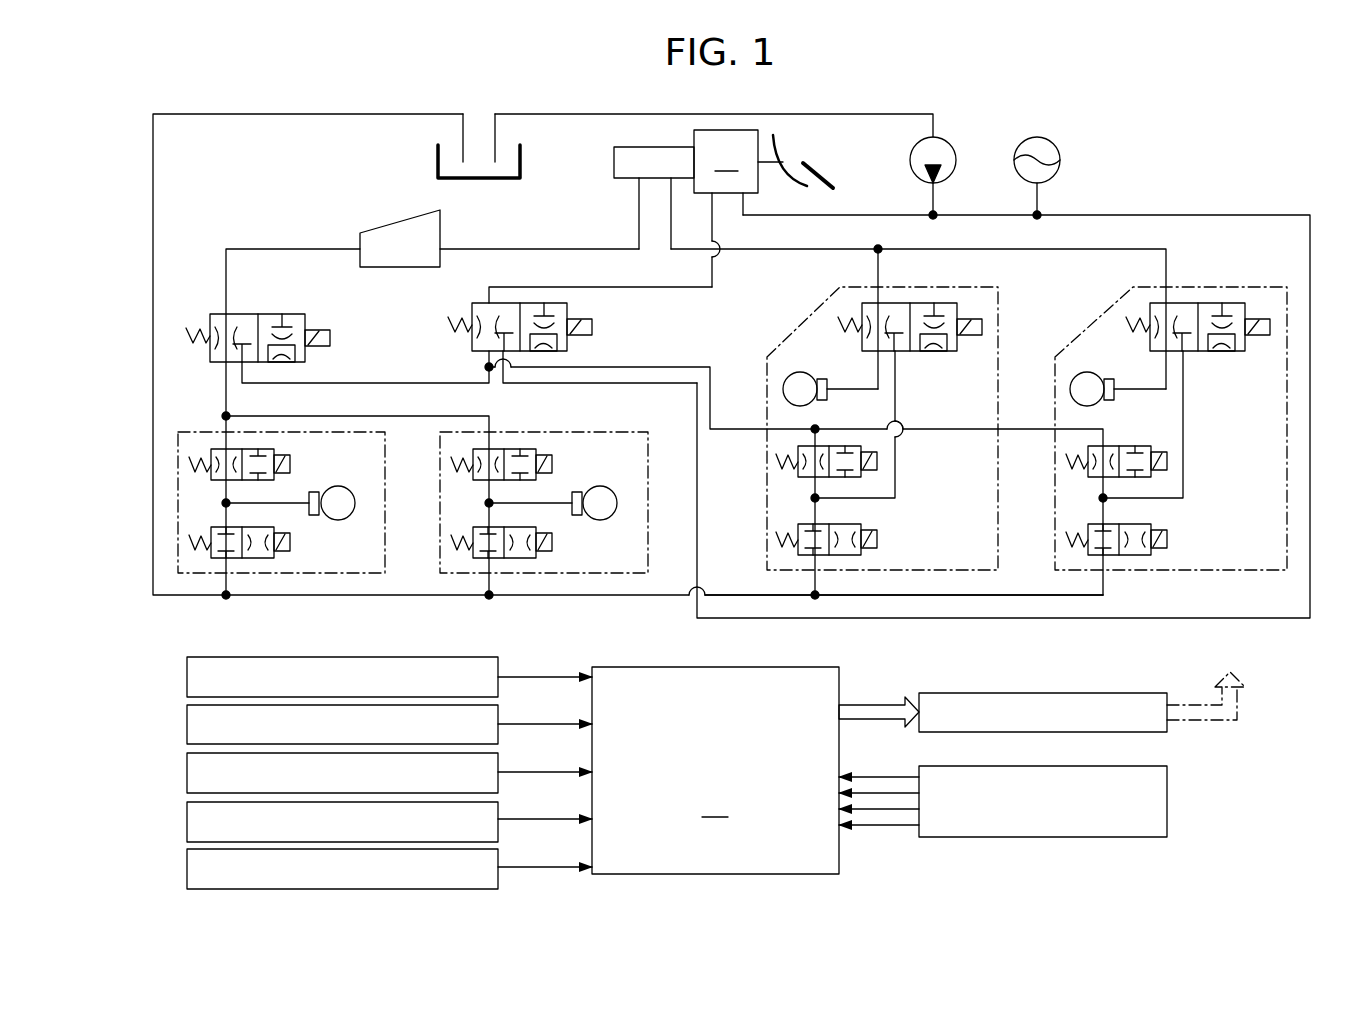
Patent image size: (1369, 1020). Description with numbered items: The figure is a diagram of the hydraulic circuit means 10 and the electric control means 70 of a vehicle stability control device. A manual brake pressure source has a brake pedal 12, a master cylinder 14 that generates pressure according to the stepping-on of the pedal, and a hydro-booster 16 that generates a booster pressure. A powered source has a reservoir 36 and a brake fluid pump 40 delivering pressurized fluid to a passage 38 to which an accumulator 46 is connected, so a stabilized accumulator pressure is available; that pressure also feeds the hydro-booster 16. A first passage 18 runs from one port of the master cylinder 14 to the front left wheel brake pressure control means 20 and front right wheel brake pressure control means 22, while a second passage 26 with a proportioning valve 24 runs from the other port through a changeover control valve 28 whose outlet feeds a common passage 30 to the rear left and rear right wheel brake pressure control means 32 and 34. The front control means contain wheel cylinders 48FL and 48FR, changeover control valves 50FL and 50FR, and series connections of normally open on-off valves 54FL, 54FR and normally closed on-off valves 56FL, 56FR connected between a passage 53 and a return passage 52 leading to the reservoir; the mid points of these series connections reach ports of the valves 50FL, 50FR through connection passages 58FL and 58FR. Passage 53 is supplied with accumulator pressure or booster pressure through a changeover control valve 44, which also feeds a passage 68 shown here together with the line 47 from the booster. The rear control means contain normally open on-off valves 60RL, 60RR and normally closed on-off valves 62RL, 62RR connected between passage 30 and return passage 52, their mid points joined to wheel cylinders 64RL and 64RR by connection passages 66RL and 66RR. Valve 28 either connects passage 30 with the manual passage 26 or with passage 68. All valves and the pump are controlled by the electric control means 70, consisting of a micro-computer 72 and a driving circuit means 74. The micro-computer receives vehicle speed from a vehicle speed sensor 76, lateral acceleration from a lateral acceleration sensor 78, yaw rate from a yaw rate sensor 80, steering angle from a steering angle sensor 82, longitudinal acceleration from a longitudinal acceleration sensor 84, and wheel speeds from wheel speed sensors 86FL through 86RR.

The hydraulic circuit means 10 is at (143, 178).
The brake pedal 12 is at (823, 172).
The master cylinder 14 is at (632, 147).
The hydro-booster 16 is at (726, 208).
The first passage 18 is at (742, 249).
The front left wheel brake pressure control means 20 is at (820, 313).
The front right wheel brake pressure control means 22 is at (1090, 313).
The proportioning valve 24 is at (380, 230).
The second passage 26 is at (250, 249).
The changeover type electromagnetic control valve 28 is at (242, 314).
The common passage 30 is at (228, 401).
The rear left wheel brake pressure control means 32 is at (196, 425).
The rear right wheel brake pressure control means 34 is at (520, 578).
The reservoir 36 is at (438, 162).
The passage 38 is at (1195, 215).
The brake fluid pump 40 is at (956, 171).
The changeover type electronic control valve 44 is at (520, 303).
The accumulator 46 is at (1062, 161).
The conduit 47 is at (632, 287).
The front left wheel cylinder 48FL is at (808, 404).
The front right wheel cylinder 48FR is at (1095, 404).
The front left changeover type electromagnetic control valve 50FL is at (919, 303).
The front right changeover type electromagnetic control valve 50FR is at (1184, 303).
The return passage 52 is at (735, 595).
The passage 53 is at (688, 367).
The front left normally open type electromagnetic on-off valve 54FL is at (860, 481).
The front right normally open type electromagnetic on-off valve 54FR is at (1150, 481).
The front left normally closed type electromagnetic on-off valve 56FL is at (860, 524).
The front right normally closed type electromagnetic on-off valve 56FR is at (1150, 524).
The front left connection passage 58FL is at (897, 379).
The front right connection passage 58FR is at (1185, 380).
The rear left normally open type electromagnetic on-off valve 60RL is at (222, 481).
The rear right normally open type electromagnetic on-off valve 60RR is at (512, 449).
The rear left normally closed type electromagnetic on-off valve 62RL is at (222, 559).
The rear right normally closed type electromagnetic on-off valve 62RR is at (483, 559).
The rear left wheel cylinder 64RL is at (338, 520).
The rear right wheel cylinder 64RR is at (598, 520).
The rear left connection passage 66RL is at (290, 501).
The rear right connection passage 66RR is at (554, 492).
The passage 68 is at (370, 383).
The electric control means 70 is at (1282, 727).
The micro-computer 72 is at (755, 770).
The driving circuit means 74 is at (1110, 732).
The vehicle speed sensor 76 is at (187, 677).
The lateral acceleration sensor 78 is at (187, 724).
The yaw rate sensor 80 is at (187, 773).
The steering angle sensor 82 is at (187, 822).
The longitudinal acceleration sensor 84 is at (187, 869).
The wheel speed sensor 86FL is at (1170, 795).
The wheel speed sensor 86RR is at (1093, 790).